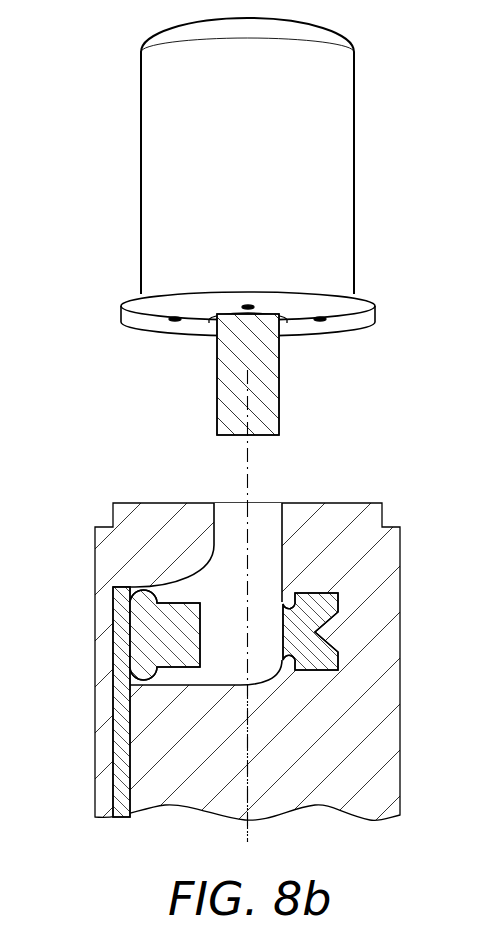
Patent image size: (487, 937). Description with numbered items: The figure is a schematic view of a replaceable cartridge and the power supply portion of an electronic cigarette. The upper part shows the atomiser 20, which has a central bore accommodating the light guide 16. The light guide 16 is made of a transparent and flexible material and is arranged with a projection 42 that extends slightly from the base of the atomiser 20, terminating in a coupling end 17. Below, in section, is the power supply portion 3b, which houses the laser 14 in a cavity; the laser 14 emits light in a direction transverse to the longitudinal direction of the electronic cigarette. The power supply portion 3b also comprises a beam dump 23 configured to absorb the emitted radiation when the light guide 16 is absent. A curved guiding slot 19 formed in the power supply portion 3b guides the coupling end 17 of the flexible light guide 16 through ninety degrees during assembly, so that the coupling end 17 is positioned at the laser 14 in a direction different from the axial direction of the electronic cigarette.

The atomiser 20 is at (374, 87).
The light guide 16 is at (269, 383).
The projection 42 is at (207, 395).
The coupling end 17 is at (263, 435).
The laser 14 is at (143, 632).
The beam dump 23 is at (328, 606).
The guiding slot 19 is at (223, 647).
The power supply portion 3b is at (418, 746).